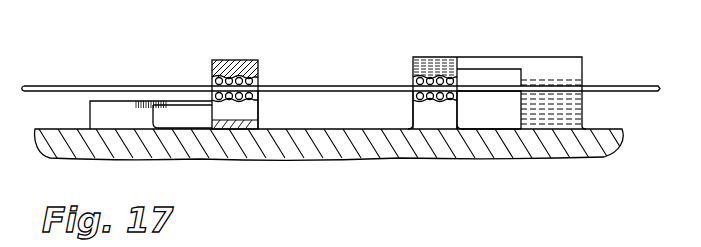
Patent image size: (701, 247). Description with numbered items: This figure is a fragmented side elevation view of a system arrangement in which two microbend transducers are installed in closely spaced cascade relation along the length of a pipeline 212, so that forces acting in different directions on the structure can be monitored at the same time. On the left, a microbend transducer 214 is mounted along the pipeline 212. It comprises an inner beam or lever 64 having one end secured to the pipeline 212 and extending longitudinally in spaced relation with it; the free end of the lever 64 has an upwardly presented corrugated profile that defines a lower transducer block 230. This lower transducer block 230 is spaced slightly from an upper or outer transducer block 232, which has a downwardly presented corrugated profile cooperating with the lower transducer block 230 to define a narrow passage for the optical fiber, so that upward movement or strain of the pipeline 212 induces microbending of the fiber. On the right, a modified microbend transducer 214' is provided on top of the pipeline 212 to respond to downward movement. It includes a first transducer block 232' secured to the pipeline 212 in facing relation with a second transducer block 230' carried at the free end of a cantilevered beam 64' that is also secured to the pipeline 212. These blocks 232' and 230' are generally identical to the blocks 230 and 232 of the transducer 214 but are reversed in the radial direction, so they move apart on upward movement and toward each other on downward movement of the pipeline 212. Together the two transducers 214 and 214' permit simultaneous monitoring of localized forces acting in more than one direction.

The pipeline 212 is at (232, 150).
The microbend transducer 214 is at (202, 77).
The inner beam or lever 64 is at (151, 94).
The upper or outer transducer block 232 is at (245, 81).
The lower transducer block 230 is at (263, 100).
The modified microbend transducer 214' is at (524, 103).
The first transducer block 232' is at (459, 119).
The second transducer block 230' is at (424, 64).
The cantilevered beam 64' is at (495, 80).